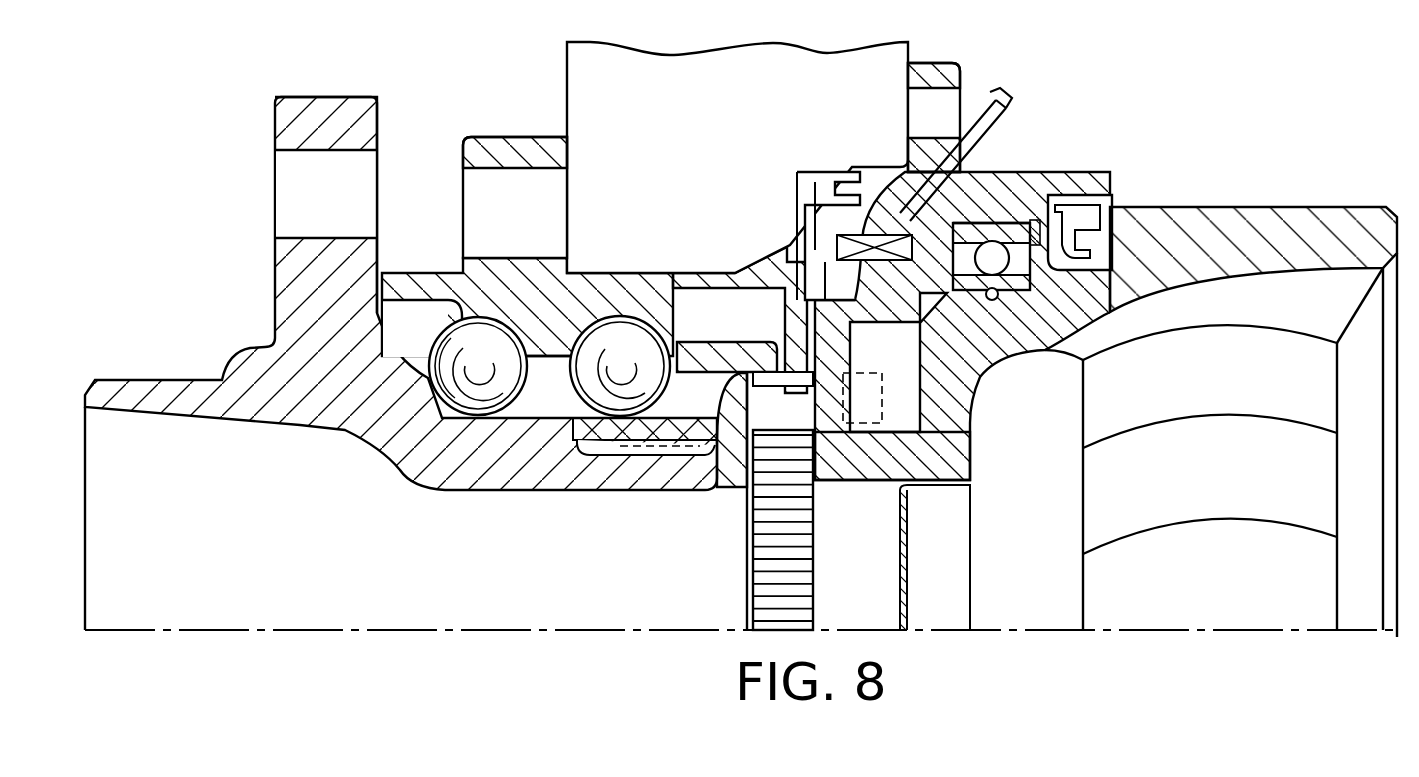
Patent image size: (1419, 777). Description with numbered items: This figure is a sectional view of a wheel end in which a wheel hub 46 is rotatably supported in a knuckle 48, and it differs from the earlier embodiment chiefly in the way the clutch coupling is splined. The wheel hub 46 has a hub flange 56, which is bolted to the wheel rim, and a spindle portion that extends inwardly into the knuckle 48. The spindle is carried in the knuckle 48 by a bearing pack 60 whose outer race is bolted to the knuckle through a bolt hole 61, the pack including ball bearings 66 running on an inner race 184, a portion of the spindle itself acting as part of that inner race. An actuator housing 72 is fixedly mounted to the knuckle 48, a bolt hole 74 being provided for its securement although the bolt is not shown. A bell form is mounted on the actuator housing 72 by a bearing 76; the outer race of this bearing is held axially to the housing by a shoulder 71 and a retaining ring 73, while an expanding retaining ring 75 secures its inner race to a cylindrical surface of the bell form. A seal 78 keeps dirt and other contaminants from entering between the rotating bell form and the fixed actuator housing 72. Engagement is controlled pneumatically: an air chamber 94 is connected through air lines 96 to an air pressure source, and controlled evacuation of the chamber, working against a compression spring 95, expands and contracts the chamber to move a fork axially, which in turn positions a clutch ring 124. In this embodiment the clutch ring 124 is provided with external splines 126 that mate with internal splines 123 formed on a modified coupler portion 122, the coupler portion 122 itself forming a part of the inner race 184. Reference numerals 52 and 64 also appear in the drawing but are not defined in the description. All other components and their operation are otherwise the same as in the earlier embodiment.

The wheel hub 46 is at (308, 405).
The knuckle 48 is at (585, 88).
The wheel hub member 52 is at (1255, 215).
The hub flange 56 is at (283, 268).
The bearing pack 60 is at (459, 115).
The bolt hole 61 is at (477, 192).
The inner ring / spindle 64 is at (470, 290).
The ball bearings 66 is at (600, 368).
The shoulder 71 is at (965, 210).
The actuator housing 72 is at (975, 180).
The retaining ring 73 is at (1030, 215).
The bolt hole 74 is at (950, 103).
The expanding retaining ring 75 is at (992, 300).
The bearing 76 is at (1032, 288).
The seal 78 is at (1080, 210).
The air chamber 94 is at (877, 212).
The compression spring 95 is at (835, 235).
The air lines 96 is at (1000, 102).
The coupler portion 122 is at (752, 358).
The internal splines 123 is at (735, 385).
The clutch ring 124 is at (795, 455).
The external splines 126 is at (775, 377).
The inner race 184 is at (680, 427).